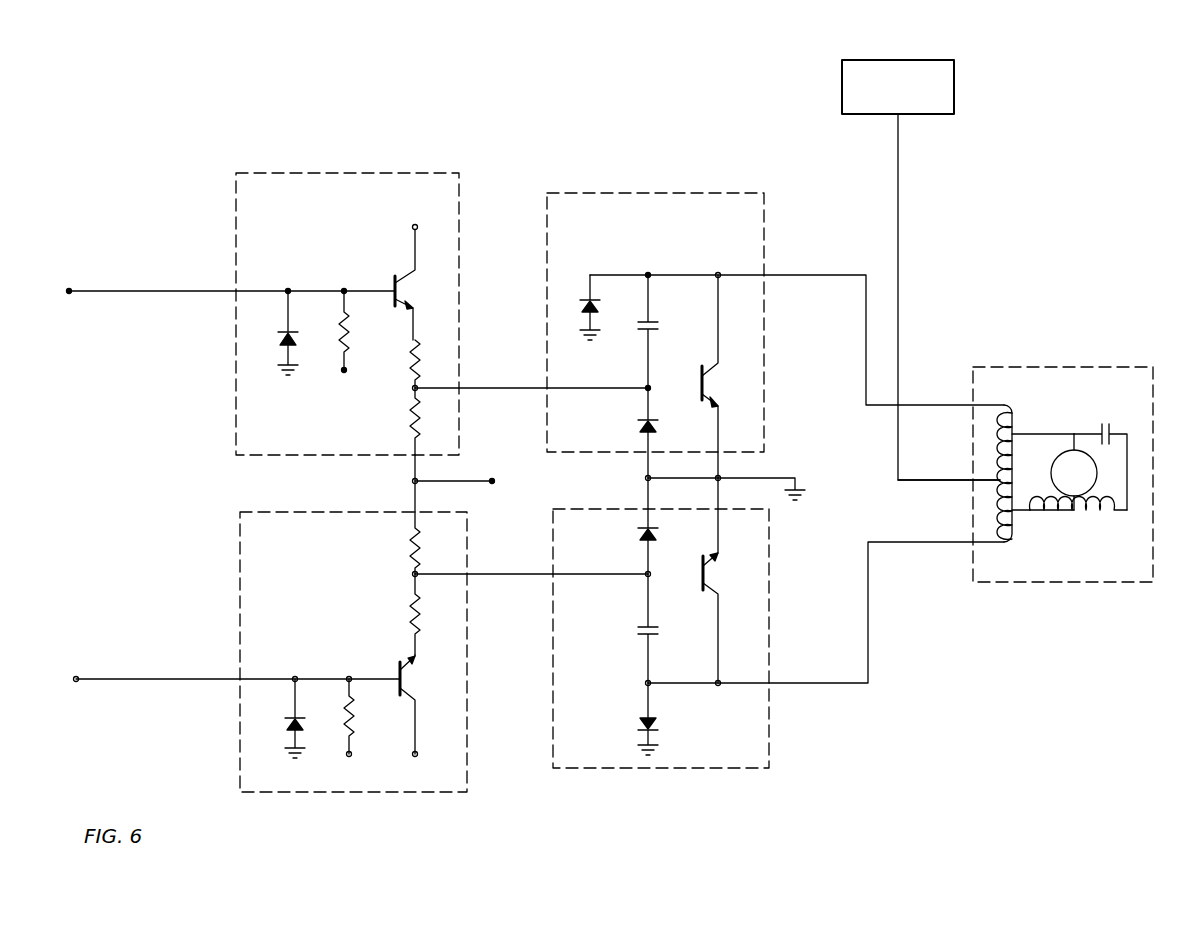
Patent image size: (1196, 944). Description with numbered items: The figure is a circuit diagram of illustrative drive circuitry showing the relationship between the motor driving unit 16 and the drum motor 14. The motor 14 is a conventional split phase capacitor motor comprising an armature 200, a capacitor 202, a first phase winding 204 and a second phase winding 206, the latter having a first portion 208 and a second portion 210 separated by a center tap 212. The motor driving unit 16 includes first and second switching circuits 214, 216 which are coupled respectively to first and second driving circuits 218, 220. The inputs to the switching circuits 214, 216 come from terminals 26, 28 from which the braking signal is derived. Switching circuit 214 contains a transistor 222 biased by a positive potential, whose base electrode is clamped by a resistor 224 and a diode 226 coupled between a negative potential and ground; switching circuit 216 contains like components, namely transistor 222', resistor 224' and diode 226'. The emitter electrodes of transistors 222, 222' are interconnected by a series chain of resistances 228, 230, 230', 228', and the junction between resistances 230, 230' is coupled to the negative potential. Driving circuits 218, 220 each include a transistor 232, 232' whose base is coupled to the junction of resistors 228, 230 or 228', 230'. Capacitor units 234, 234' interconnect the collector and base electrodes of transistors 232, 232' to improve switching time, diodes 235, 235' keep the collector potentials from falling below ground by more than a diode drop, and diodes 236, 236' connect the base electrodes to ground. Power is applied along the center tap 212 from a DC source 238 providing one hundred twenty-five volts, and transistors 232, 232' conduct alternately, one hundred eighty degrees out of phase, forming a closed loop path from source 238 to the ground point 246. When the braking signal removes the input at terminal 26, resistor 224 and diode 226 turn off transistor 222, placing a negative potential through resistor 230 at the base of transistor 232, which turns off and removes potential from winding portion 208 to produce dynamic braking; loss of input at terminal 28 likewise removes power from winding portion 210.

The drum motor 14 is at (1090, 367).
The motor driving unit 16 is at (522, 183).
The terminal 26 is at (72, 291).
The terminal 28 is at (78, 679).
The armature 200 is at (1062, 455).
The capacitor 202 is at (1106, 425).
The first phase winding 204 is at (1074, 520).
The second phase winding 206 is at (1014, 410).
The first portion 208 is at (996, 434).
The second portion 210 is at (996, 510).
The center tap 212 is at (900, 481).
The first switching circuit 214 is at (405, 173).
The second switching circuit 216 is at (467, 520).
The first driving circuit 218 is at (692, 193).
The second driving circuit 220 is at (769, 513).
The transistor 222 is at (389, 271).
The transistor 222' is at (398, 719).
The resistor 224 is at (365, 345).
The resistor 224' is at (371, 731).
The diode 226 is at (269, 346).
The diode 226' is at (276, 734).
The resistance 228 is at (389, 365).
The resistance 228' is at (387, 614).
The resistance 230 is at (387, 421).
The resistance 230' is at (387, 544).
The transistor 232 is at (688, 376).
The transistor 232' is at (690, 582).
The capacitor unit 234 is at (666, 332).
The capacitor unit 234' is at (671, 630).
The diode 235 is at (577, 295).
The diode 235' is at (623, 719).
The diode 236 is at (619, 434).
The diode 236' is at (617, 527).
The DC source of potential 238 is at (905, 59).
The ground point 246 is at (722, 478).